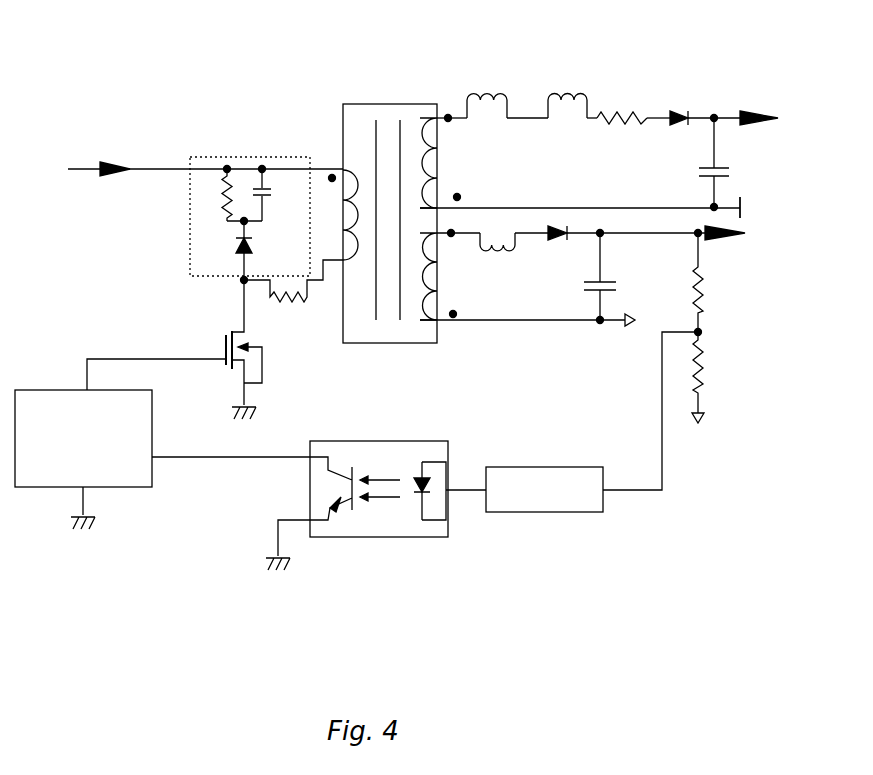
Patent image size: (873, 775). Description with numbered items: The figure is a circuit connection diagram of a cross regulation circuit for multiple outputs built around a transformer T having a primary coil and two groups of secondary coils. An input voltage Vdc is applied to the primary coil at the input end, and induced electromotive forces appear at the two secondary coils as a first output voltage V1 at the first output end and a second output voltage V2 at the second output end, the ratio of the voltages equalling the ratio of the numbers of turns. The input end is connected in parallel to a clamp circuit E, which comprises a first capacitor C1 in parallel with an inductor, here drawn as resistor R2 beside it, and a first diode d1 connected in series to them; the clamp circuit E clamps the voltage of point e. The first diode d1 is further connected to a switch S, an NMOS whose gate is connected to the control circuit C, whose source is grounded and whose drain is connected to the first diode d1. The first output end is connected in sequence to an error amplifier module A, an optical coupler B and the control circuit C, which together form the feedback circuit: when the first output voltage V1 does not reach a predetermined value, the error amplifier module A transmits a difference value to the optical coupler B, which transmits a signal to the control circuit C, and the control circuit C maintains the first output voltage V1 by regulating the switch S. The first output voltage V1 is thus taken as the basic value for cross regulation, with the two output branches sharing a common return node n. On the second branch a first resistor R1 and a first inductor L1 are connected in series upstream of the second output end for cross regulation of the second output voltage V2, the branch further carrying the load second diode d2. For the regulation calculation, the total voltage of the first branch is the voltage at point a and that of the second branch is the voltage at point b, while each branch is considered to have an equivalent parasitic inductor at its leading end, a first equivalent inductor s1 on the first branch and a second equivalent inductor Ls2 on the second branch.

The input voltage Vdc is at (185, 177).
The clamp circuit E is at (258, 157).
The resistor R2 is at (222, 190).
The first capacitor C1 is at (268, 200).
The first diode d1 is at (236, 250).
The point e is at (240, 281).
The transformer T is at (395, 343).
The point b is at (448, 110).
The second equivalent inductor Ls2 is at (489, 95).
The first inductor L1 is at (572, 95).
The first resistor R1 is at (620, 108).
The second diode d2 is at (680, 108).
The second output voltage V2 is at (772, 121).
The common node n is at (746, 207).
The point a is at (448, 240).
The first equivalent inductor s1 is at (497, 250).
The first output voltage V1 is at (738, 236).
The switch S is at (222, 346).
The control circuit C is at (83, 459).
The optical coupler B is at (402, 540).
The error amplifier module A is at (544, 489).